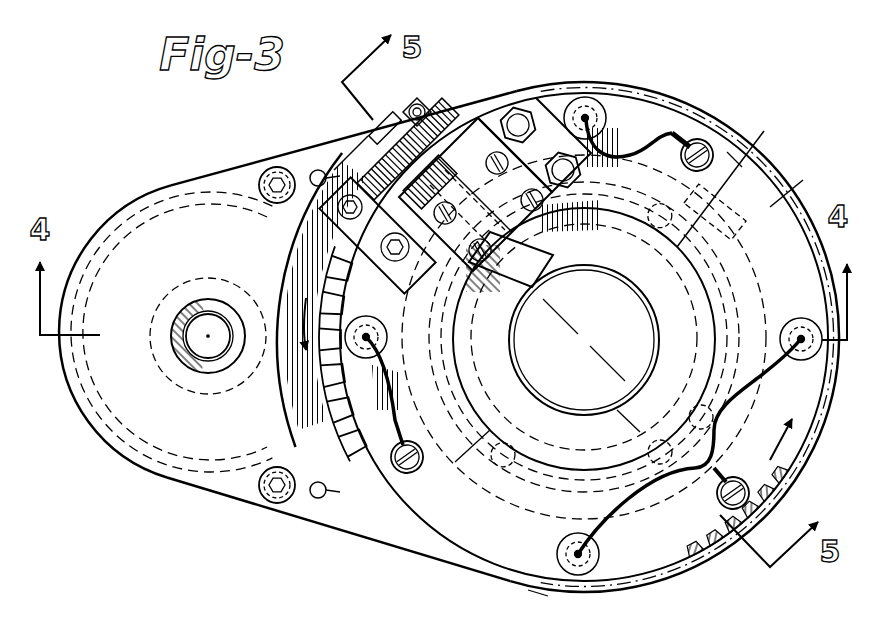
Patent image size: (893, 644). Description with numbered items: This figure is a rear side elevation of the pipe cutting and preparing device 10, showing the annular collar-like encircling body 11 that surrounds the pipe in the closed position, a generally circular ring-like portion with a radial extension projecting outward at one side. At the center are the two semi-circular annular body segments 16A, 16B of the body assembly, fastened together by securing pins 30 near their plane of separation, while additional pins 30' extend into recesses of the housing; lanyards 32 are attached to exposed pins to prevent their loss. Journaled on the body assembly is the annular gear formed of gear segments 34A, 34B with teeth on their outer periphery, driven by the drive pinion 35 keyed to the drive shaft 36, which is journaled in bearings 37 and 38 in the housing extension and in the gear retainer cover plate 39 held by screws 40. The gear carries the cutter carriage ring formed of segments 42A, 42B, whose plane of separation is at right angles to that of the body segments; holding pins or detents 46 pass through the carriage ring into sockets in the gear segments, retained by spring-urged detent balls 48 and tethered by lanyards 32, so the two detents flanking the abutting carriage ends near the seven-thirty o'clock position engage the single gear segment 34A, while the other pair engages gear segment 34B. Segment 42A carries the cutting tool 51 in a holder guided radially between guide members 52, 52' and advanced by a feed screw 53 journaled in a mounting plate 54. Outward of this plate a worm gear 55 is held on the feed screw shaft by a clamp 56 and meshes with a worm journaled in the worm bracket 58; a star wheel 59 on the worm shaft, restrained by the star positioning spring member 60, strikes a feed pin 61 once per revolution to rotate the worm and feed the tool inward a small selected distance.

The pipe cutting and preparing device 10 is at (243, 150).
The annular collar-like encircling body 11 is at (680, 96).
The semi-circular annular body segment 16A is at (482, 383).
The semi-circular annular body segment 16B is at (690, 322).
The securing pin 30 is at (584, 337).
The additional pin 30' is at (581, 460).
The lanyard 32 is at (632, 158).
The gear segment 34A is at (738, 560).
The gear segment 34B is at (790, 483).
The drive pinion 35 is at (278, 393).
The drive shaft 36 is at (197, 342).
The bearing 37 is at (90, 376).
The bearing 38 is at (183, 287).
The gear retainer cover plate 39 is at (207, 497).
The screw 40 is at (278, 168).
The cutter carriage segment 42A is at (741, 177).
The cutter carriage segment 42B is at (810, 185).
The holding pin or detent 46 is at (600, 110).
The spring urged detent ball 48 is at (540, 590).
The cutting tool 51 is at (548, 250).
The guide member 52 is at (380, 351).
The guide member 52' is at (539, 141).
The feed screw 53 is at (475, 194).
The mounting plate 54 is at (478, 120).
The worm gear 55 is at (458, 110).
The clamp 56 is at (416, 104).
The worm bracket 58 is at (352, 258).
The star wheel 59 is at (343, 165).
The star positioning spring member 60 is at (313, 270).
The feed pin 61 is at (318, 168).